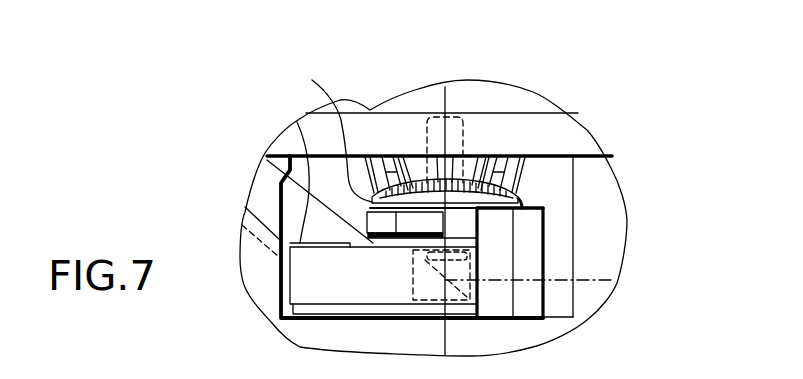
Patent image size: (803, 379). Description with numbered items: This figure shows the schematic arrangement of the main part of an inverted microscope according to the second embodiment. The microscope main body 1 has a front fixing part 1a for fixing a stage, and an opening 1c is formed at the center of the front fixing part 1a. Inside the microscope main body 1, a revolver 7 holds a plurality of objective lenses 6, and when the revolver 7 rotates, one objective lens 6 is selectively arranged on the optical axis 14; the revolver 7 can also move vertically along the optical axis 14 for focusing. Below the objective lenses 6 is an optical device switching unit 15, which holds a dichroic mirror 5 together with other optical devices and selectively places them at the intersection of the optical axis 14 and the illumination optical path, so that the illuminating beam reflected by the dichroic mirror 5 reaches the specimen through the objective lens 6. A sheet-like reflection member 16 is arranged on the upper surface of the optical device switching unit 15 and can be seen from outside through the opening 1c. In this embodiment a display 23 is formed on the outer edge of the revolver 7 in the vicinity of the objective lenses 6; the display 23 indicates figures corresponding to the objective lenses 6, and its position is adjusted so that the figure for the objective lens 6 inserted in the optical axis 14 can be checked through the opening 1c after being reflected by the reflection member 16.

The microscope main body 1 is at (367, 340).
The front fixing part 1a is at (258, 256).
The opening 1c is at (268, 192).
The dichroic mirror 5 is at (447, 278).
The objective lens 6 is at (457, 167).
The revolver 7 is at (482, 163).
The optical axis 14 is at (445, 111).
The optical device switching unit 15 is at (297, 290).
The reflection member 16 is at (307, 150).
The display 23 is at (331, 131).